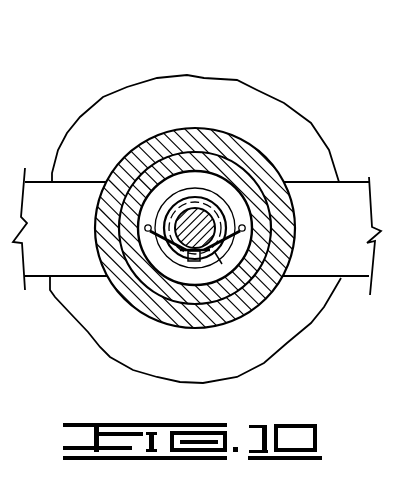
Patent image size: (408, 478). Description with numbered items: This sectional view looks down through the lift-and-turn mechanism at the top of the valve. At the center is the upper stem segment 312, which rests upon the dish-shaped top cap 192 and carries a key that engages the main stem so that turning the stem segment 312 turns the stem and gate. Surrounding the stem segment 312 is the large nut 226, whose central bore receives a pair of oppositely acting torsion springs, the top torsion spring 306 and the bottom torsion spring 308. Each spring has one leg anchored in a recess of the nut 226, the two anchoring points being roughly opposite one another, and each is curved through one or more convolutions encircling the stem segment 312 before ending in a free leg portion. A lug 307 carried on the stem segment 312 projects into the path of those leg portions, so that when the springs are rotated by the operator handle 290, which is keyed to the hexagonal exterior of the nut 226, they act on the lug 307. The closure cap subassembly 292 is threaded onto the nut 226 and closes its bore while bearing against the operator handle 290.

The dish-shaped top cap 192 is at (259, 310).
The nut 226 is at (138, 287).
The operator handle 290 is at (339, 200).
The closure cap subassembly 292 is at (211, 263).
The top torsion spring 306 is at (109, 240).
The lug 307 is at (193, 262).
The bottom torsion spring 308 is at (272, 248).
The upper stem segment 312 is at (196, 222).